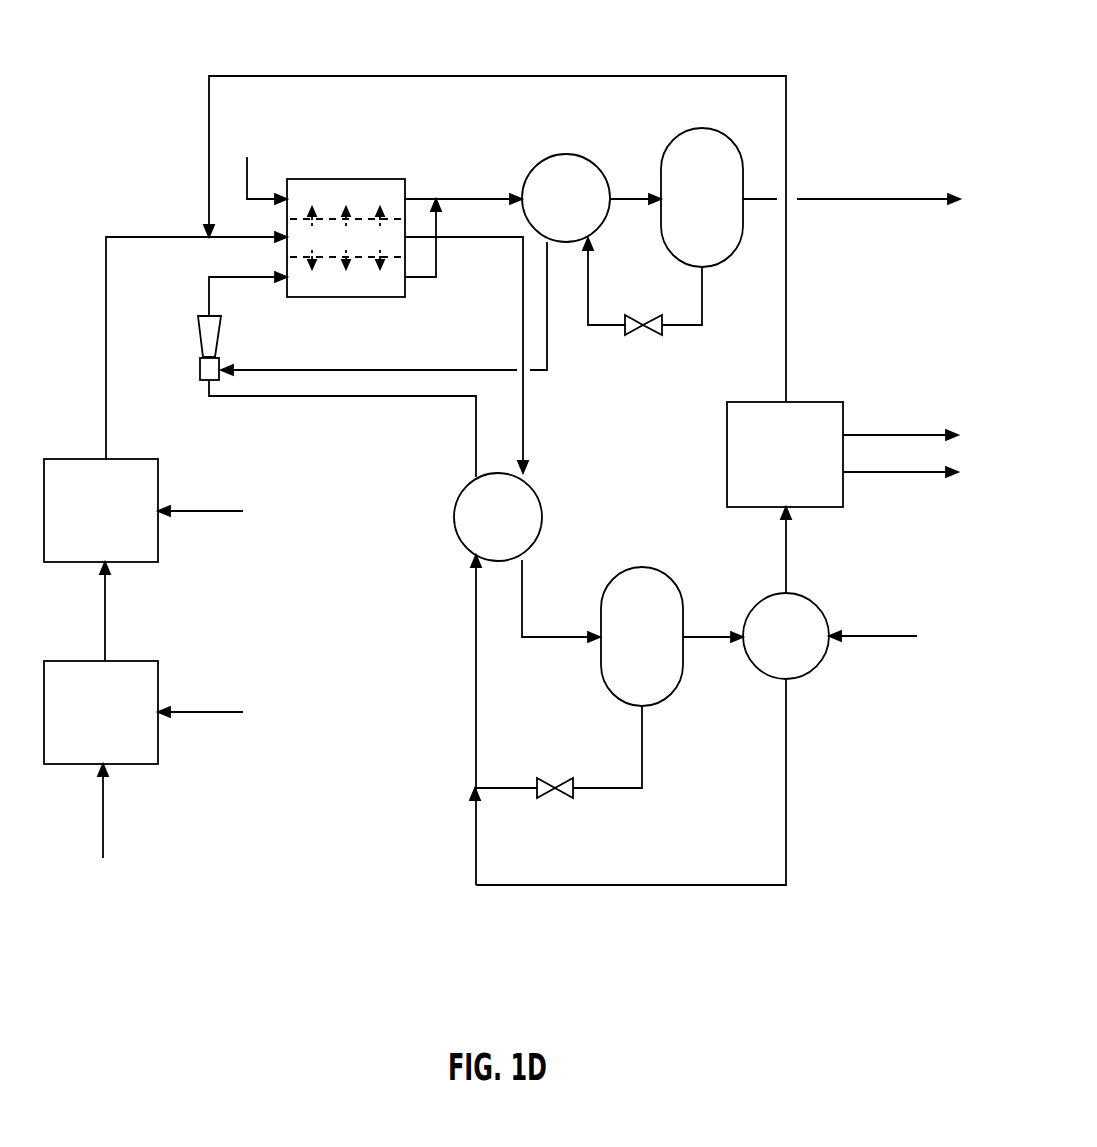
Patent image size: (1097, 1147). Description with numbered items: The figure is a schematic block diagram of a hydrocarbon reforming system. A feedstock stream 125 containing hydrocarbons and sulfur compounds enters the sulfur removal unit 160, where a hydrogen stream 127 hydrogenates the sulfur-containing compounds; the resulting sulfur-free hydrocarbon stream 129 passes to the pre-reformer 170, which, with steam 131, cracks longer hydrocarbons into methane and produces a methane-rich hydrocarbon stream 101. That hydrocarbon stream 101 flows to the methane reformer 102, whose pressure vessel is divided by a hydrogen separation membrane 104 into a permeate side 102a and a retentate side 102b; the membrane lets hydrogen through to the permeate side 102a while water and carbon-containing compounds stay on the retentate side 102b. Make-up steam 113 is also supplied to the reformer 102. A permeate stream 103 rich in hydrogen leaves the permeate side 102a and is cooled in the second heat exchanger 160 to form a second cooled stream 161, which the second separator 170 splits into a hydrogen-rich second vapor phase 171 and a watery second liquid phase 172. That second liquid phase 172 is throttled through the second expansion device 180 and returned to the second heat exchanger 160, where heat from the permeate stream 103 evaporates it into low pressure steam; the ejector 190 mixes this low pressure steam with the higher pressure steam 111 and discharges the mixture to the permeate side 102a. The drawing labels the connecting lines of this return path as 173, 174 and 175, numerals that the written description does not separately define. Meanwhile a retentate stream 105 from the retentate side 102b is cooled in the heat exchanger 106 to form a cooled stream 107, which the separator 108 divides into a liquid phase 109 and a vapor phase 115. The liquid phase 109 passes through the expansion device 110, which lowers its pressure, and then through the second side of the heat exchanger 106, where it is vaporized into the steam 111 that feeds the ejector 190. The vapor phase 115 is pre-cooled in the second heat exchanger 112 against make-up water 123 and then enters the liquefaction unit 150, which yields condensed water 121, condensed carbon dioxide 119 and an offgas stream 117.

The hydrocarbon stream 101 is at (165, 237).
The methane reformer 102 is at (315, 179).
The permeate side 102a is at (372, 195).
The retentate side 102b is at (389, 242).
The permeate stream 103 is at (470, 198).
The hydrogen separation membrane 104 is at (358, 257).
The retentate stream 105 is at (463, 238).
The heat exchanger 106 is at (498, 517).
The cooled stream 107 is at (545, 640).
The separator 108 is at (642, 636).
The liquid phase 109 is at (592, 790).
The expansion device 110 is at (548, 780).
The steam 111 is at (330, 398).
The second heat exchanger 112 is at (652, 696).
The make-up steam 113 is at (260, 162).
The vapor phase 115 is at (697, 640).
The offgas stream 117 is at (729, 75).
The condensed CO2 119 is at (870, 435).
The condensed water 121 is at (870, 474).
The make-up water 123 is at (865, 636).
The feedstock stream 125 is at (105, 830).
The hydrogen stream 127 is at (197, 712).
The sulfur-free hydrocarbon stream 129 is at (107, 630).
The steam 131 is at (197, 511).
The liquefaction unit 150 is at (785, 454).
The sulfur removal unit; second heat exchanger 160 is at (327, 459).
The second cooled stream 161 is at (620, 198).
The pre-reformer; second separator 170 is at (393, 345).
The second vapor phase 171 is at (870, 198).
The second liquid phase 172 is at (705, 306).
The recycle stream 173 is at (612, 327).
The recycle stream 174 is at (378, 367).
The inlet stream 175 is at (207, 298).
The second expansion device 180 is at (640, 318).
The ejector 190 is at (198, 369).